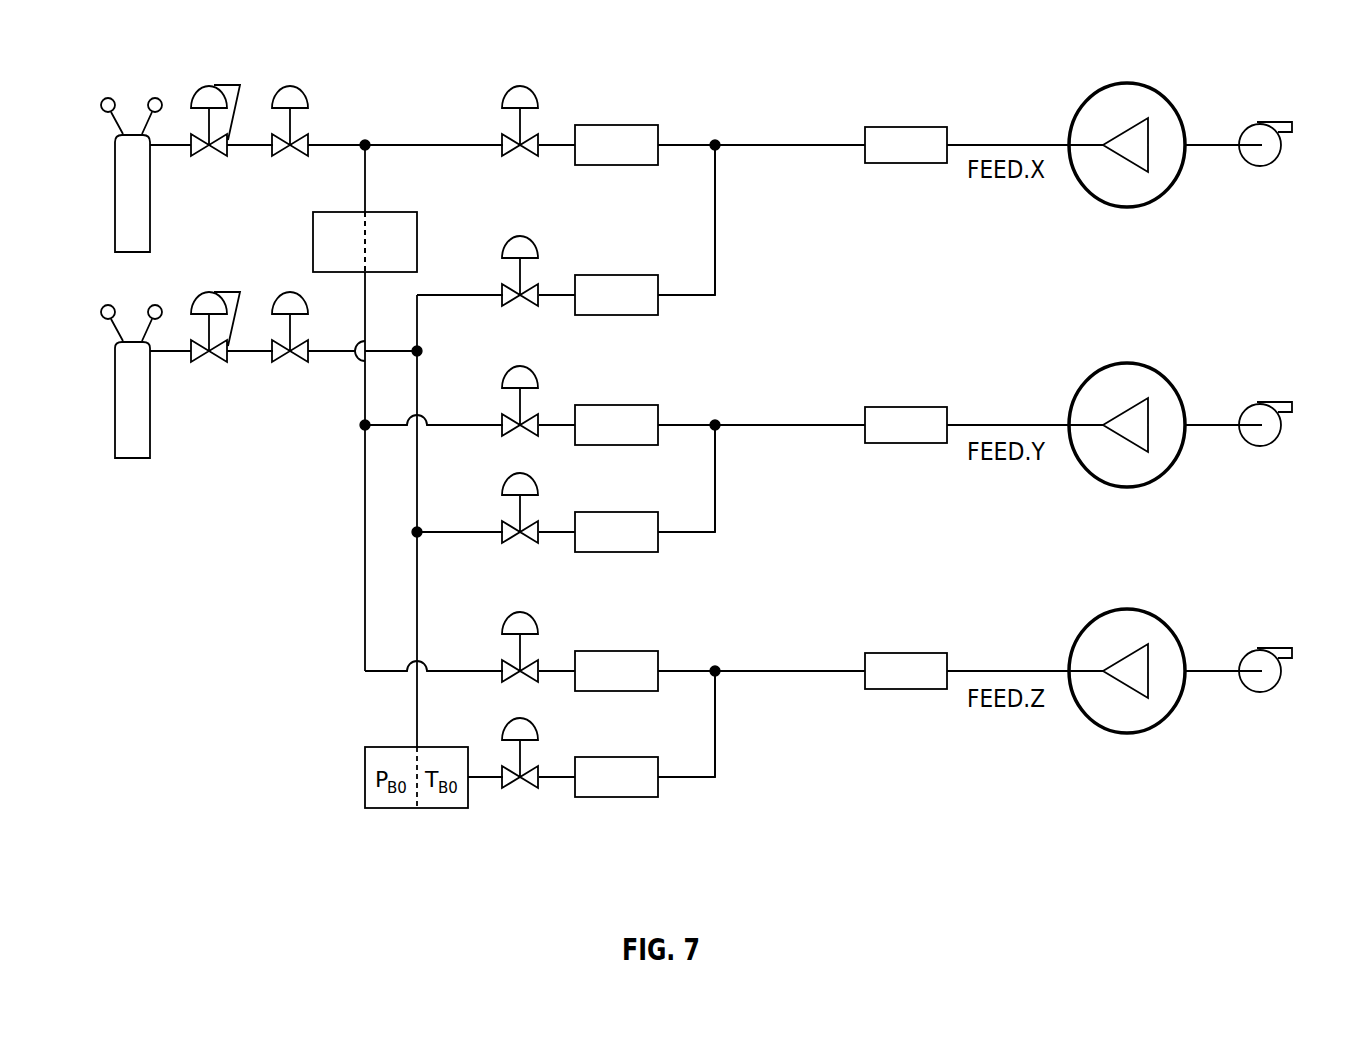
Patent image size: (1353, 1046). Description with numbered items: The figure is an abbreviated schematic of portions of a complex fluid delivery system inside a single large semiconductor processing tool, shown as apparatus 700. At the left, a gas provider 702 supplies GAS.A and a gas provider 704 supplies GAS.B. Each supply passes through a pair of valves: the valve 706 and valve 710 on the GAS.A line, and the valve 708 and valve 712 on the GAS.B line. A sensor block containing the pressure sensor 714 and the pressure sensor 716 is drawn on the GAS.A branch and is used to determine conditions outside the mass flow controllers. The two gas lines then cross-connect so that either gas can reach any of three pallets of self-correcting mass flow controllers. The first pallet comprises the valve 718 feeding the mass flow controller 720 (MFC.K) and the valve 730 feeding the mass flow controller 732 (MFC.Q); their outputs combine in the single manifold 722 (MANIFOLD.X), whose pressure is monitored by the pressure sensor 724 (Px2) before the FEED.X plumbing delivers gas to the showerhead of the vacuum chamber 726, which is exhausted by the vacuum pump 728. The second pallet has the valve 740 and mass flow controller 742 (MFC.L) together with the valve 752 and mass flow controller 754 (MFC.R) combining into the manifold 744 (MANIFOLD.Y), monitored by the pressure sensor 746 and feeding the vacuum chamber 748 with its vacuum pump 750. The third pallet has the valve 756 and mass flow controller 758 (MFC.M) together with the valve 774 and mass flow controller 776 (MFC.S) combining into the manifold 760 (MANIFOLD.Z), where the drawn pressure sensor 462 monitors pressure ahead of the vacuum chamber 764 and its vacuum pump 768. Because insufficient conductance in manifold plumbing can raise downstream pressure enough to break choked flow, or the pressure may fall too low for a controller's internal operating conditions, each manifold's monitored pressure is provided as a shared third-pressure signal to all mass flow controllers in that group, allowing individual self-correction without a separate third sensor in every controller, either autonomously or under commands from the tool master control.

The apparatus 700 is at (1222, 93).
The gas provider 702 is at (152, 246).
The gas provider 704 is at (157, 491).
The valve 706 is at (194, 79).
The valve 708 is at (194, 289).
The valve 710 is at (274, 79).
The valve 712 is at (274, 289).
The pressure sensor 714 is at (338, 212).
The pressure sensor 716 is at (390, 212).
The valve 718 is at (504, 76).
The mass flow controller 720 is at (601, 117).
The manifold X 722 is at (774, 207).
The pressure sensor 724 is at (913, 127).
The vacuum chamber 726 is at (1112, 272).
The vacuum pump X 728 is at (1254, 292).
The valve 730 is at (468, 237).
The mass flow controller 732 is at (601, 274).
The valve 740 is at (460, 390).
The mass flow controller 742 is at (601, 409).
The manifold 744 is at (774, 497).
The pressure sensor 746 is at (913, 407).
The vacuum chamber 748 is at (1112, 557).
The vacuum pump Y 750 is at (1254, 574).
The valve 752 is at (460, 572).
The mass flow controller 754 is at (601, 512).
The valve 756 is at (467, 704).
The mass flow controller 758 is at (601, 651).
The manifold 760 is at (774, 726).
The pressure sensor PZ2 462 is at (913, 653).
The vacuum chamber 764 is at (1112, 816).
The vacuum pump Z 768 is at (1254, 816).
The valve 774 is at (504, 852).
The mass flow controller 776 is at (601, 756).